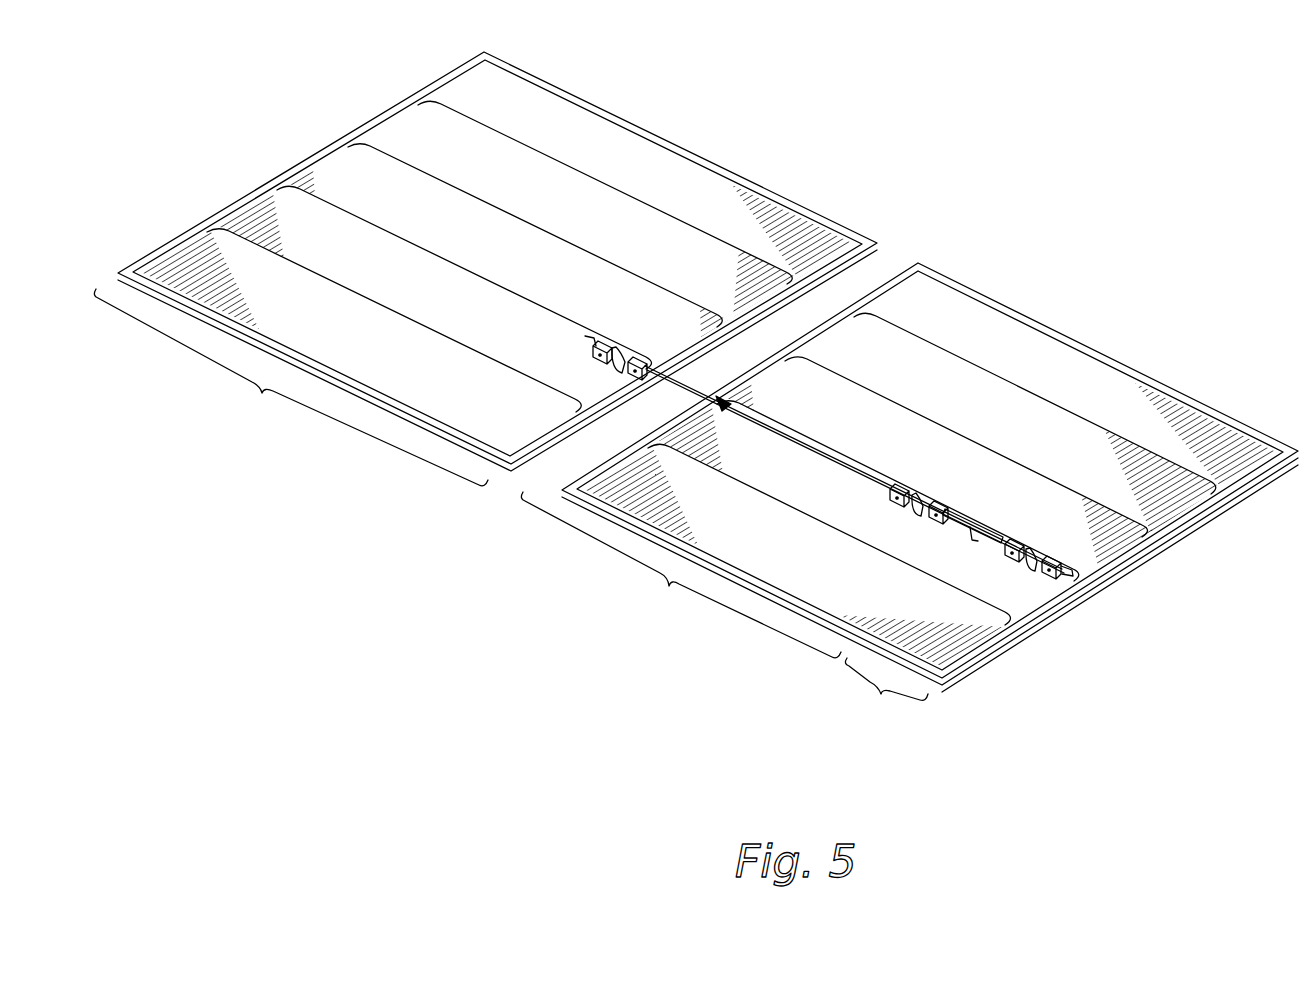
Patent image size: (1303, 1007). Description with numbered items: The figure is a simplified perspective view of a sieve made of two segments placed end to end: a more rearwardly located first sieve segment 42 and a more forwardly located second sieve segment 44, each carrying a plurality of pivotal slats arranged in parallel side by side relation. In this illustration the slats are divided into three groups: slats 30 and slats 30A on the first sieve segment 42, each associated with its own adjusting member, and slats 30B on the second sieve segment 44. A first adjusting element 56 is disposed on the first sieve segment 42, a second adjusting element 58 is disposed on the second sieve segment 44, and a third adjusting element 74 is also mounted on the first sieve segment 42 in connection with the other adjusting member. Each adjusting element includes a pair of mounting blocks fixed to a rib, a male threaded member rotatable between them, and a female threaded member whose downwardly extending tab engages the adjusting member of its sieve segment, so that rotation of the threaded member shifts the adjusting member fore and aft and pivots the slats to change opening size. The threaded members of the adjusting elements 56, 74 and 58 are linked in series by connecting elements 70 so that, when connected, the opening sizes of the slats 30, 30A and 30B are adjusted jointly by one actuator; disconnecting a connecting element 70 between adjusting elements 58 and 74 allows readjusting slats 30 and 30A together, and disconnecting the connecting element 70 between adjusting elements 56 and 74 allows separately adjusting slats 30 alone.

The slats 30 is at (870, 691).
The slats 30A is at (681, 575).
The slats 30B is at (291, 387).
The first sieve segment 42 is at (1097, 350).
The second sieve segment 44 is at (683, 144).
The first adjusting element 56 is at (1036, 545).
The second adjusting element 58 is at (622, 335).
The connecting element 70 is at (797, 438).
The third adjusting element 74 is at (907, 487).